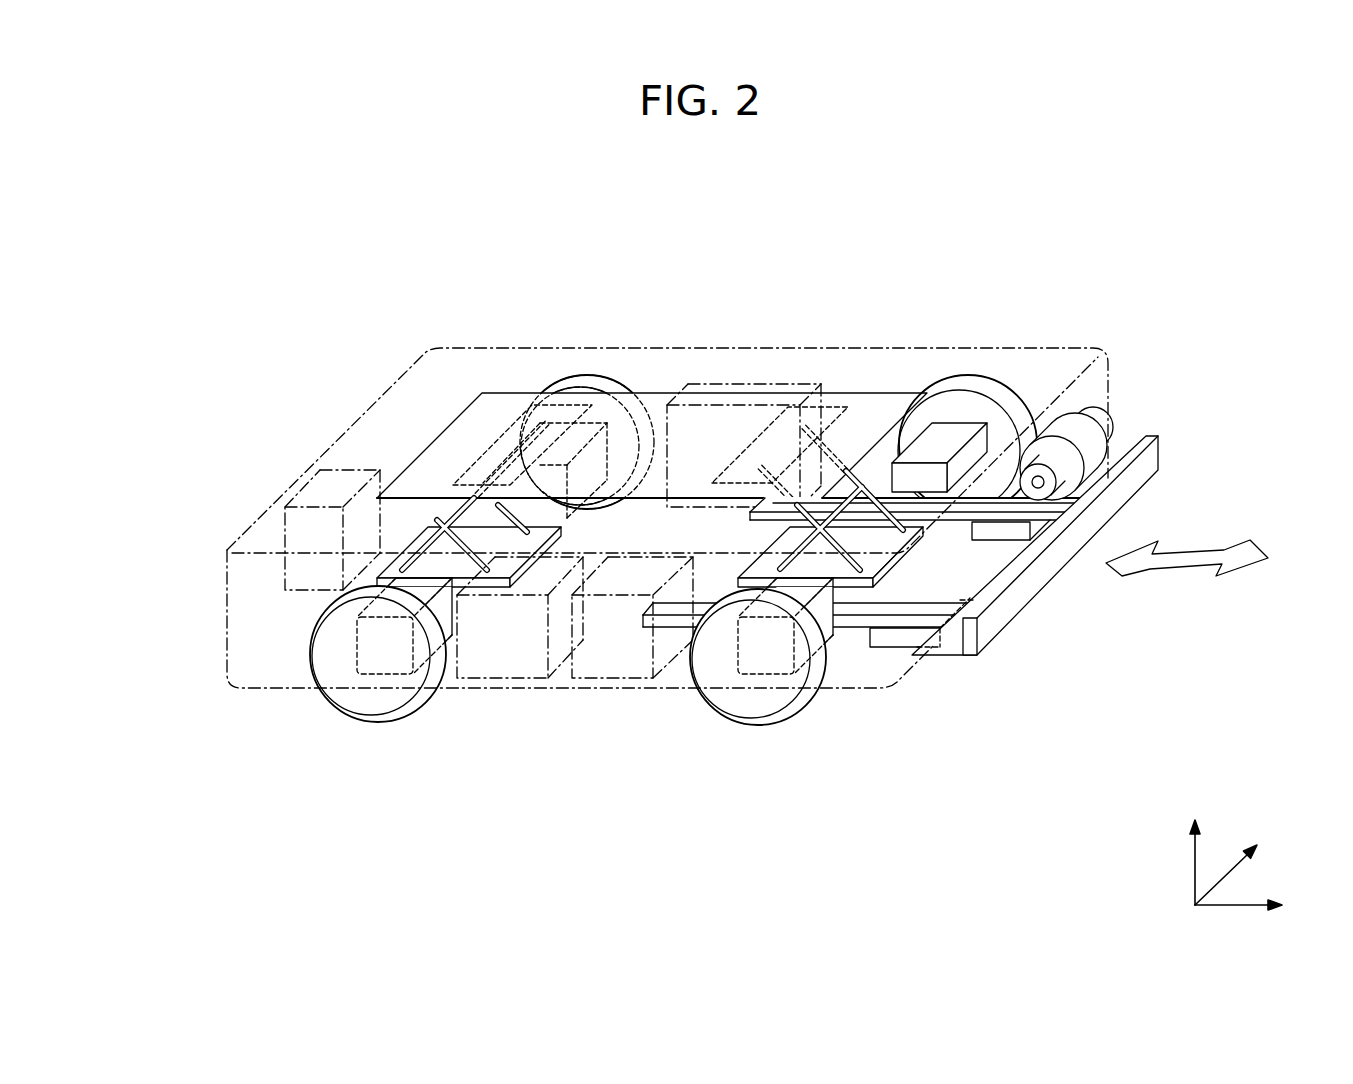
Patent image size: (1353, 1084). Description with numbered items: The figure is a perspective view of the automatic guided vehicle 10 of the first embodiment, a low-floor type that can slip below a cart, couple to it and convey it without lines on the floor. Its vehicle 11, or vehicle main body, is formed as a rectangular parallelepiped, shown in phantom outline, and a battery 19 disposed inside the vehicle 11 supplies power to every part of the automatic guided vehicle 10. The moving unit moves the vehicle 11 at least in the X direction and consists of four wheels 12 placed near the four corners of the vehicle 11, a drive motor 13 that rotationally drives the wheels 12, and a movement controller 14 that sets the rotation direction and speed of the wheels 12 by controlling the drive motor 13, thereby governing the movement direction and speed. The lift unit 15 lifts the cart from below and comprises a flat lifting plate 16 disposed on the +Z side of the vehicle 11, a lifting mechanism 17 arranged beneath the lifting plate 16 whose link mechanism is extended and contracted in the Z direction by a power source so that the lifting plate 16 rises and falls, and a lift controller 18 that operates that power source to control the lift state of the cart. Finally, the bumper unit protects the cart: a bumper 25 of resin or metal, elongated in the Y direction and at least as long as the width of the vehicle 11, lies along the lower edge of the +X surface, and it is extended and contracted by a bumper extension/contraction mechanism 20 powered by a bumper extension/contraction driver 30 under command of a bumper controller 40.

The automatic guided vehicle 10 is at (702, 551).
The vehicle 11 is at (640, 348).
The wheels 12 is at (352, 705).
The drive motor 13 is at (433, 592).
The movement controller 14 is at (515, 678).
The lift unit 15 is at (668, 511).
The lifting plate 16 is at (455, 440).
The lifting mechanism 17 is at (427, 545).
The lift controller 18 is at (280, 573).
The battery 19 is at (733, 383).
The bumper extension/contraction mechanism 20 is at (1048, 614).
The bumper 25 is at (1134, 476).
The bumper extension/contraction driver 30 is at (1150, 400).
The bumper controller 40 is at (623, 677).